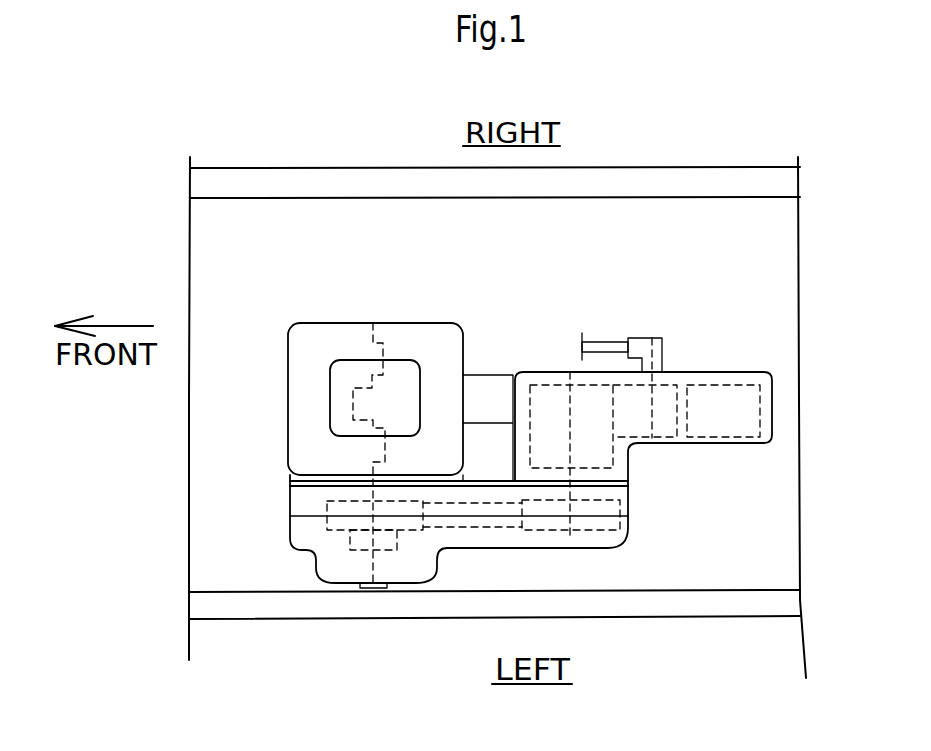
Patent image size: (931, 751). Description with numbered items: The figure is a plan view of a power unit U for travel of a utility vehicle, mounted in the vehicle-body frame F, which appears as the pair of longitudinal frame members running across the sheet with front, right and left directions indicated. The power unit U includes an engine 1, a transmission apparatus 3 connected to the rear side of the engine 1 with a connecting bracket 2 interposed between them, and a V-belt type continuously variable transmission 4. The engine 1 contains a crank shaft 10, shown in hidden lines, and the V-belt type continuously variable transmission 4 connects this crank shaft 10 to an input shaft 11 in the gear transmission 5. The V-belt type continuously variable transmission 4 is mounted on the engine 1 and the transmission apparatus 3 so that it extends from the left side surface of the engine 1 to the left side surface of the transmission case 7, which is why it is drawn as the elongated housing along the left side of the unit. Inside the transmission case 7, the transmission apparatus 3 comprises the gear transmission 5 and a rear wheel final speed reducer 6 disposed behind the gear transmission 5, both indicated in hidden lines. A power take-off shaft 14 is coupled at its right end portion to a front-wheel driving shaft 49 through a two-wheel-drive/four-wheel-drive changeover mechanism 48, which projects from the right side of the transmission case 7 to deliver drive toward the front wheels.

The engine 1 is at (280, 370).
The connecting bracket 2 is at (485, 388).
The transmission apparatus 3 is at (555, 334).
The V-belt type continuously variable transmission 4 is at (547, 548).
The gear transmission 5 is at (547, 383).
The rear wheel final speed reducer 6 is at (732, 432).
The transmission case 7 is at (672, 368).
The crank shaft 10 is at (370, 463).
The input shaft 11 is at (572, 447).
The power take-off shaft 14 is at (656, 420).
The two-wheel-drive/four-wheel-drive changeover mechanism 48 is at (652, 338).
The front-wheel driving shaft 49 is at (610, 342).
The vehicle-body frame F is at (273, 187).
The power unit U is at (400, 310).